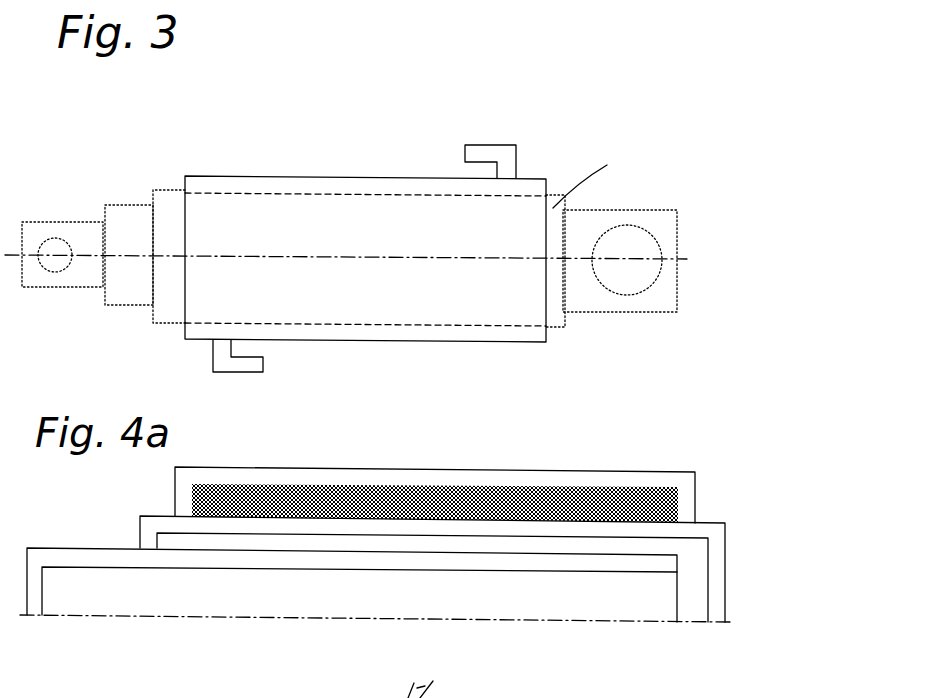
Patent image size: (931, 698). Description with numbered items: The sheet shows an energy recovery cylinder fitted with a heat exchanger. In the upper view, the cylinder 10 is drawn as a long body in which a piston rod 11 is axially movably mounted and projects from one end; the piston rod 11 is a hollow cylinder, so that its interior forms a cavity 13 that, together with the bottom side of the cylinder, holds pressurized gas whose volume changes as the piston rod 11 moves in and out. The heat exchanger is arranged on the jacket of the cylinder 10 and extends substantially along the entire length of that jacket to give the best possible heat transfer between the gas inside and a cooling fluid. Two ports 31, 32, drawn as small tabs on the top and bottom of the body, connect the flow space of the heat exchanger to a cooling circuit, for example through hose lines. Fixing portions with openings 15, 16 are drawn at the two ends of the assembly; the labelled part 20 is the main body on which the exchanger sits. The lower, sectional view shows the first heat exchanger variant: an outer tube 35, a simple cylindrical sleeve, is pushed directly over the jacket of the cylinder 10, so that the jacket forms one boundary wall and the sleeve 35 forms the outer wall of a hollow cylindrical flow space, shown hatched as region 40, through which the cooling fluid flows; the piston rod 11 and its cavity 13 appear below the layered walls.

In FIG. 3, the cylinder 10 is at (613, 169).
In FIG. 4A, the cylinder 10 is at (700, 532).
In FIG. 3, the piston rod 11 is at (128, 220).
In FIG. 4A, the piston rod 11 is at (75, 548).
In FIG. 4A, the cavity 13 is at (359, 591).
In FIG. 3, the opening 15 is at (647, 247).
In FIG. 3, the bore 16 is at (53, 257).
In FIG. 3, the main body 20 is at (288, 220).
In FIG. 3, the port 31 is at (483, 160).
In FIG. 3, the port 32 is at (243, 373).
In FIG. 4A, the outer tube 35 is at (598, 482).
In FIG. 4A, the active layer 40 is at (535, 485).